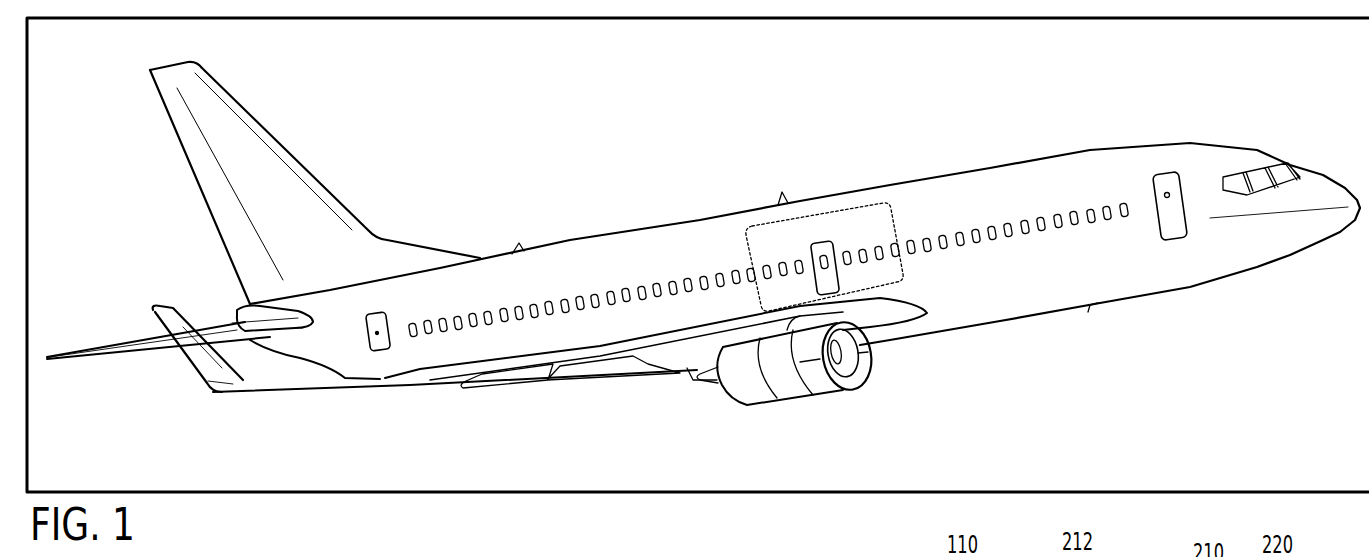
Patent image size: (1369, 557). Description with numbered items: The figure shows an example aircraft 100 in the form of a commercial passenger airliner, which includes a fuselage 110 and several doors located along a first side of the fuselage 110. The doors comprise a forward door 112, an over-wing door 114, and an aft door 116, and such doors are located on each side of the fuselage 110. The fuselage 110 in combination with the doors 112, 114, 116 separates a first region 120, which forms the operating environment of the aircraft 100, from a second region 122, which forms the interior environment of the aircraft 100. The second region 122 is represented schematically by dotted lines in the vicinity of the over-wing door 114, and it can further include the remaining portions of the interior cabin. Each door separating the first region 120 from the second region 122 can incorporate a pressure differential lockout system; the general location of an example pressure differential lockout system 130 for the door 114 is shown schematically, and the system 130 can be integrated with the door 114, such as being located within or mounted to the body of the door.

The aircraft 100 is at (653, 144).
The fuselage 110 is at (643, 247).
The forward door 112 is at (1168, 185).
The over-wing door 114 is at (818, 244).
The aft door 116 is at (375, 312).
The first region 120 is at (1044, 108).
The second region 122 is at (761, 246).
The pressure differential lockout system 130 is at (827, 246).